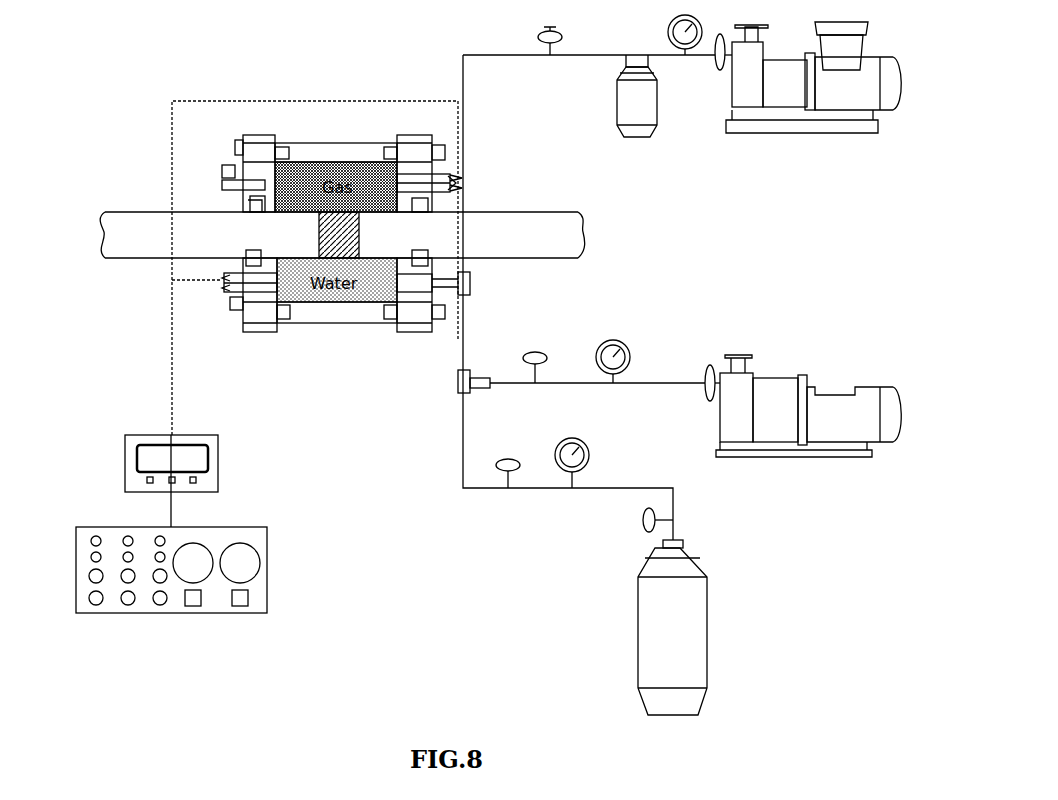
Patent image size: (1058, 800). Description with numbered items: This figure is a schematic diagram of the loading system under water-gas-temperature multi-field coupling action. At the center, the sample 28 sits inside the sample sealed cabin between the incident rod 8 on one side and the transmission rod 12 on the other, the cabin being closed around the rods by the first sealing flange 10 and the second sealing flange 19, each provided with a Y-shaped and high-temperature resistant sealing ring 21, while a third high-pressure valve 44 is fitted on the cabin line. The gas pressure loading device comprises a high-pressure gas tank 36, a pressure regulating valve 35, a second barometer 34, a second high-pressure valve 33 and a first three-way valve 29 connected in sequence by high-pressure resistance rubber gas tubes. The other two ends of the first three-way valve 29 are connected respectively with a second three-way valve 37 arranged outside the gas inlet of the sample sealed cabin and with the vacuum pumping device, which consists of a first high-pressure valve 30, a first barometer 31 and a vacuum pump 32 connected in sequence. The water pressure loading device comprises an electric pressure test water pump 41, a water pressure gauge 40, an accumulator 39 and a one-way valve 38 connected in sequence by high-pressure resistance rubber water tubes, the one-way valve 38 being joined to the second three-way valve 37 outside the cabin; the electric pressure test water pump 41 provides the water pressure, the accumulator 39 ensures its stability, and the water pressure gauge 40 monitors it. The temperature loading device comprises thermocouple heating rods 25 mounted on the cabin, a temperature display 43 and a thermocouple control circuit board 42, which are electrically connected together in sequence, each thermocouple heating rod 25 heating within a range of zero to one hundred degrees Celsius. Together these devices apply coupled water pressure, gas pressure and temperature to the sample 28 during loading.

The incident rod 8 is at (202, 235).
The first sealing flange 10 is at (429, 163).
The transmission rod 12 is at (472, 235).
The second sealing flange 19 is at (255, 163).
The Y-shaped and high-temperature resistant sealing ring 21 is at (243, 200).
The thermocouple heating rod 25 is at (227, 296).
The sample 28 is at (351, 235).
The first three-way valve 29 is at (458, 381).
The first high-pressure valve 30 is at (535, 357).
The first barometer 31 is at (616, 349).
The vacuum pump 32 is at (803, 395).
The second high-pressure valve 33 is at (507, 460).
The second barometer 34 is at (572, 450).
The pressure regulating valve 35 is at (639, 520).
The gas tank 36 is at (653, 627).
The second three-way valve 37 is at (447, 283).
The one-way valve 38 is at (534, 41).
The accumulator 39 is at (617, 96).
The water pressure gauge 40 is at (669, 35).
The electric pressure test water pump 41 is at (808, 92).
The thermocouple control circuit board 42 is at (153, 570).
The temperature display 43 is at (153, 481).
The third high-pressure valve 44 is at (227, 171).